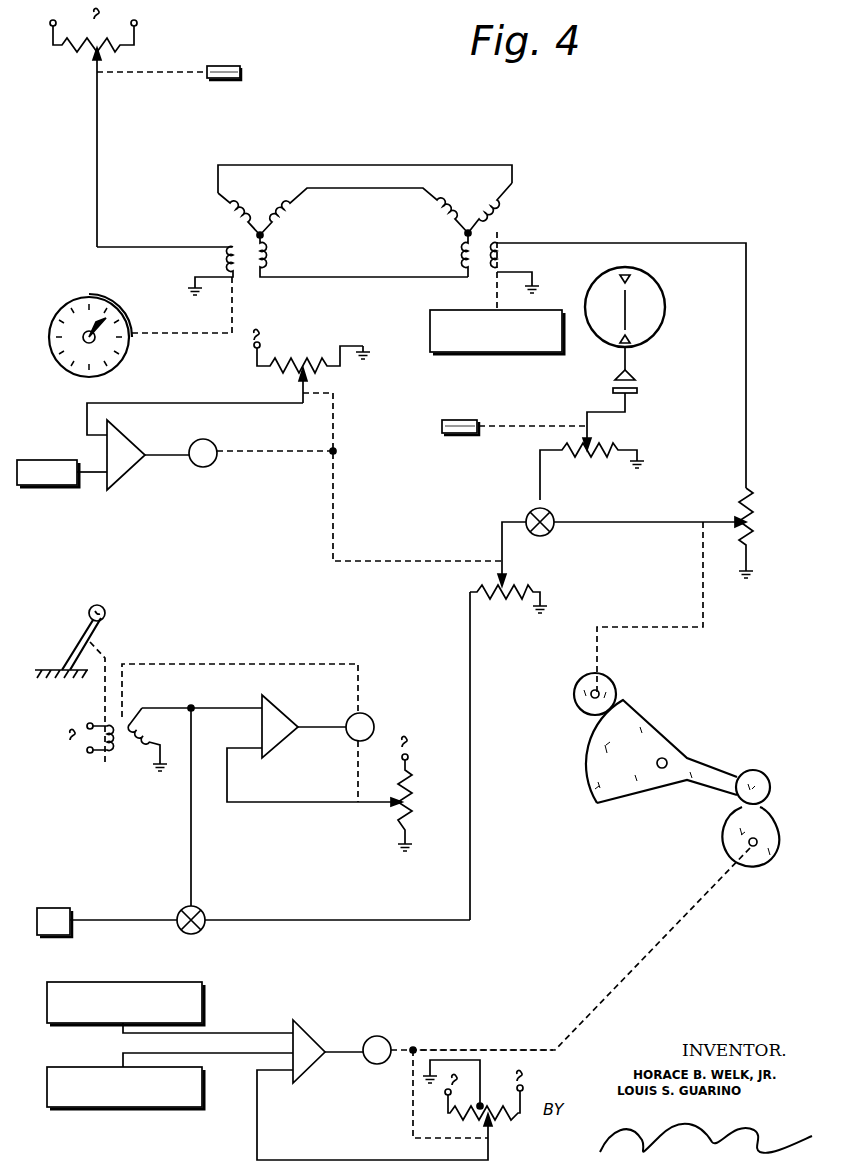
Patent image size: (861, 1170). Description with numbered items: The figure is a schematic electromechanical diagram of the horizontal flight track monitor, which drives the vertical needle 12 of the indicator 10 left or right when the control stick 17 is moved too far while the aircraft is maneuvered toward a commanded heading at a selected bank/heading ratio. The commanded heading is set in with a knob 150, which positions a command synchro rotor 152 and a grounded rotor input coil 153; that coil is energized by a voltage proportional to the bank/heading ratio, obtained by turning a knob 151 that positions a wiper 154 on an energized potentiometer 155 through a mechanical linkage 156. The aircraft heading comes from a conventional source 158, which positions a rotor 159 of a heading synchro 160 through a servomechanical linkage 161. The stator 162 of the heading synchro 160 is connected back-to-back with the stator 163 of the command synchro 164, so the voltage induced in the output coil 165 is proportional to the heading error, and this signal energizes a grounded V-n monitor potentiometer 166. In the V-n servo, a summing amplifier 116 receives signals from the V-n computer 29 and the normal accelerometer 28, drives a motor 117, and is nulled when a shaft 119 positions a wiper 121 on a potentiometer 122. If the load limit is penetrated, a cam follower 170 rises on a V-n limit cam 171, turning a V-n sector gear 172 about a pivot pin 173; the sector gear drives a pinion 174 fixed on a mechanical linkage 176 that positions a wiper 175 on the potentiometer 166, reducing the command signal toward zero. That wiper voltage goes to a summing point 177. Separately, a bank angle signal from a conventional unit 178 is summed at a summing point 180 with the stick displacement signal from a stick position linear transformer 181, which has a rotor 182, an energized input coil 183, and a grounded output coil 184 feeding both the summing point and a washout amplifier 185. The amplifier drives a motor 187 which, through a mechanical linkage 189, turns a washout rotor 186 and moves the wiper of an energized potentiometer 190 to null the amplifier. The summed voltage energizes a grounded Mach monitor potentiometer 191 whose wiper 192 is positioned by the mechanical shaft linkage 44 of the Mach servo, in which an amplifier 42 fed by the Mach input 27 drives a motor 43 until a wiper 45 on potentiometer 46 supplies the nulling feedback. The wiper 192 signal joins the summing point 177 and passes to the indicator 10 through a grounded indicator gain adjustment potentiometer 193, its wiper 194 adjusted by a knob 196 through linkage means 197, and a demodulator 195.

The aircraft instrument 10 is at (662, 290).
The vertical indicator needle 12 is at (627, 300).
The control stick 17 is at (103, 605).
The Mach input 27 is at (51, 460).
The normal accelerometer 28 is at (65, 1067).
The V-n computer 29 is at (65, 982).
The amplifier 42 is at (130, 442).
The motor 43 is at (217, 442).
The mechanical shaft linkage 44 is at (334, 515).
The wiper 45 is at (303, 390).
The potentiometer 46 is at (317, 367).
The summing amplifier 116 is at (305, 1022).
The motor 117 is at (387, 1032).
The shaft 119 is at (622, 982).
The wiper 121 is at (492, 1130).
The potentiometer 122 is at (471, 1116).
The knob 150 is at (112, 305).
The knob 151 is at (233, 68).
The command synchro rotor 152 is at (233, 310).
The rotor input coil 153 is at (228, 260).
The wiper 154 is at (98, 172).
The potentiometer 155 is at (124, 47).
The mechanical linkage 156 is at (167, 73).
The aircraft heading source 158 is at (430, 314).
The rotor 159 is at (498, 268).
The heading synchro 160 is at (493, 229).
The servomechanical linkage 161 is at (497, 294).
The stator 162 is at (466, 234).
The stator 163 is at (261, 236).
The command synchro 164 is at (238, 239).
The output coil 165 is at (497, 238).
The V-n monitor potentiometer 166 is at (753, 508).
The cam follower 170 is at (763, 769).
The V-n limit cam 171 is at (725, 830).
The V-n sector gear 172 is at (618, 702).
The pivot pin 173 is at (665, 758).
The pinion 174 is at (584, 674).
The wiper 175 is at (726, 515).
The mechanical linkage 176 is at (638, 622).
The summing point 177 is at (552, 510).
The bank angle unit 178 is at (60, 909).
The summing point 180 is at (202, 908).
The stick position linear transformer 181 is at (130, 760).
The rotor 182 is at (105, 707).
The input coil 183 is at (110, 758).
The output coil 184 is at (136, 729).
The stick position washout amplifier 185 is at (280, 708).
The washout rotor 186 is at (153, 740).
The motor 187 is at (370, 713).
The mechanical linkage 189 is at (210, 665).
The potentiometer 190 is at (416, 787).
The Mach monitor potentiometer 191 is at (490, 592).
The wiper 192 is at (507, 565).
The indicator gain adjustment potentiometer 193 is at (562, 445).
The wiper 194 is at (593, 433).
The demodulator 195 is at (633, 377).
The knob 196 is at (447, 419).
The linkage means 197 is at (536, 424).